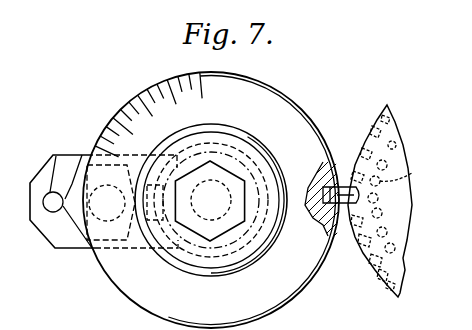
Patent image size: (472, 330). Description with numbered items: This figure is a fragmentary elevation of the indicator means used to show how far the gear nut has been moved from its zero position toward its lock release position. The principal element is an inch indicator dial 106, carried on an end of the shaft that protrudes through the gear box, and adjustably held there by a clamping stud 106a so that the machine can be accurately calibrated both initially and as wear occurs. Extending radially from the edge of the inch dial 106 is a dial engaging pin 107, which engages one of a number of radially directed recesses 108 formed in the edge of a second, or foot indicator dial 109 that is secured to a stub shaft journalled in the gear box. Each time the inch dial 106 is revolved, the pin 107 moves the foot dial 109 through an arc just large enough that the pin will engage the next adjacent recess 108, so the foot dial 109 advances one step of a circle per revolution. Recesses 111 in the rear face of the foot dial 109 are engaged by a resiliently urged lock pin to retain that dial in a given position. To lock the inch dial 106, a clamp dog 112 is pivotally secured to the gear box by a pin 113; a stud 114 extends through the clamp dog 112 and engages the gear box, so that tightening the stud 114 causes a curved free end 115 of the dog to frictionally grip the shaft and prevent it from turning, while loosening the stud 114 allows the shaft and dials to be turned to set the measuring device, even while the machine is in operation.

The inch indicator dial 106 is at (294, 100).
The clamping stud 106a is at (210, 242).
The dial engaging pin 107 is at (337, 237).
The radially directed recesses 108 is at (367, 277).
The foot indicator dial 109 is at (377, 121).
The recesses 111 is at (412, 176).
The clamp dog 112 is at (69, 252).
The pin 113 is at (54, 160).
The stud 114 is at (79, 155).
The curved free end 115 is at (203, 145).